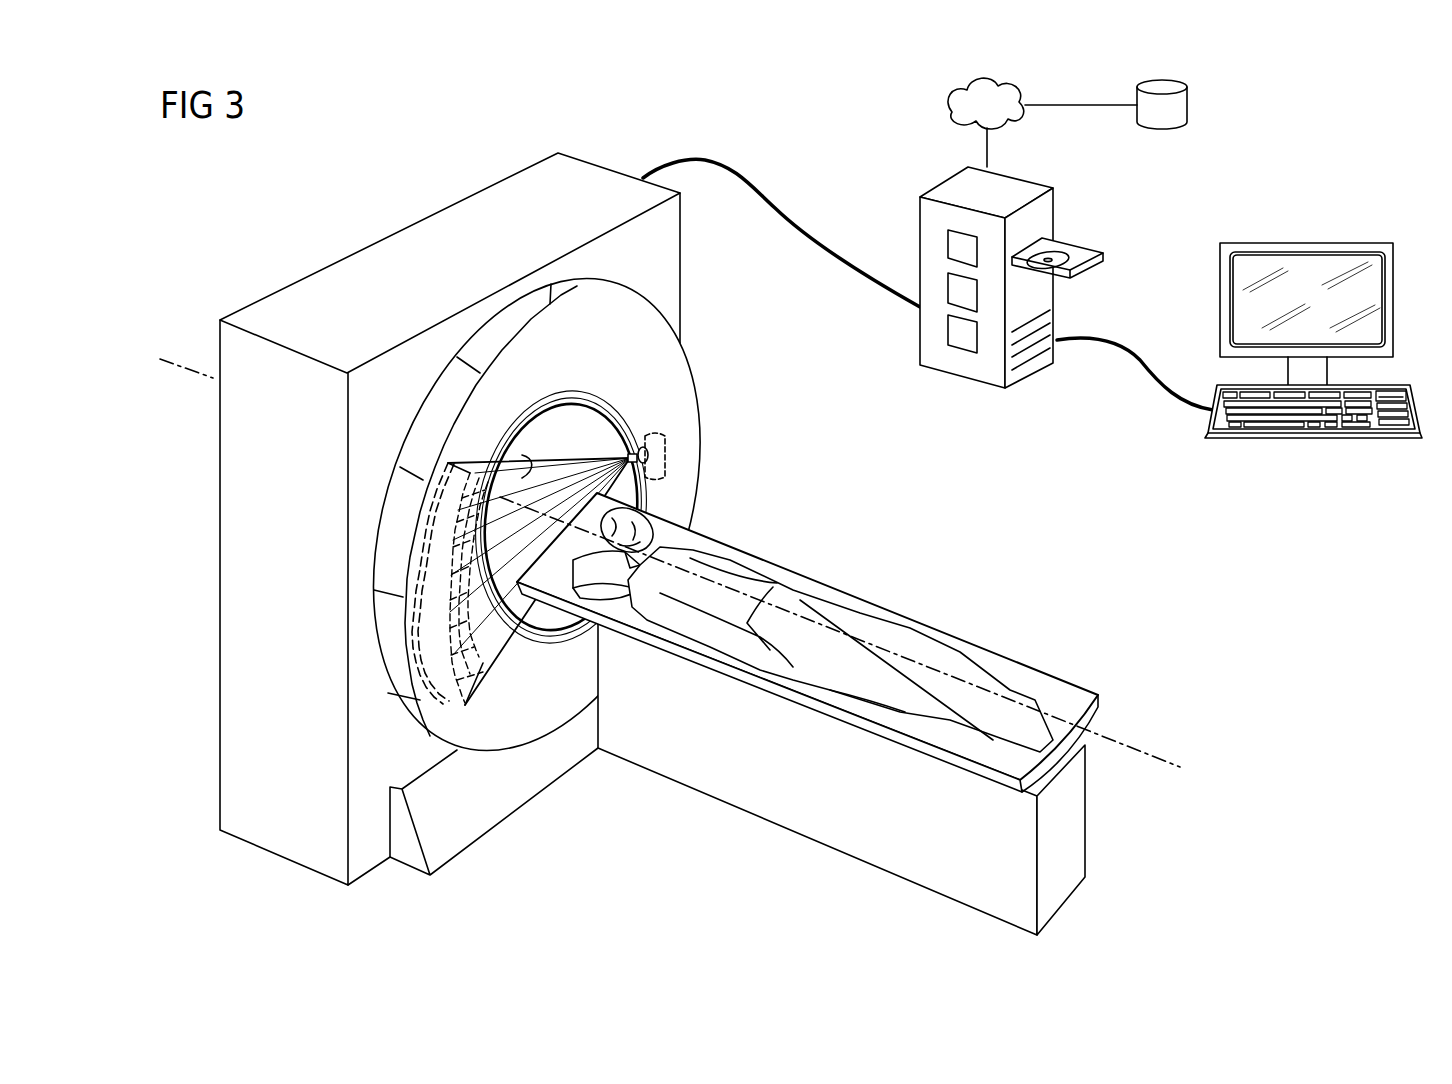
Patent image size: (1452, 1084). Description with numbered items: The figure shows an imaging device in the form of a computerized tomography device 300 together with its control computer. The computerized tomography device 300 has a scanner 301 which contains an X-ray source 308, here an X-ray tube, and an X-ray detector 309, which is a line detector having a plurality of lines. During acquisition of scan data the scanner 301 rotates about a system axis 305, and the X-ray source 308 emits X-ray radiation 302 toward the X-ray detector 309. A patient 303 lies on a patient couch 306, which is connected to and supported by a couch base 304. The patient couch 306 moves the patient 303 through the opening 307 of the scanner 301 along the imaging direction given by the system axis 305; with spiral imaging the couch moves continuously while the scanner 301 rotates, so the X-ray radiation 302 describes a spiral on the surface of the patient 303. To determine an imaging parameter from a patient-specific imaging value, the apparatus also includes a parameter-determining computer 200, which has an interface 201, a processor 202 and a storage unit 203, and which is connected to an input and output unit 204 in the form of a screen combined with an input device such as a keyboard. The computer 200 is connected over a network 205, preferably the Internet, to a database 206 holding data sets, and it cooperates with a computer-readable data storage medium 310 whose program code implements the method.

The parameter-determining computer 200 is at (1005, 185).
The interface 201 is at (947, 247).
The processor 202 is at (947, 285).
The storage unit 203 is at (960, 353).
The input and output unit 204 is at (1220, 305).
The network 205 is at (947, 105).
The database 206 is at (1190, 102).
The computerized tomography device 300 is at (407, 240).
The scanner 301 is at (699, 396).
The X-ray radiation 302 is at (583, 457).
The patient 303 is at (885, 643).
The couch base 304 is at (905, 862).
The system axis 305 is at (1123, 740).
The patient couch 306 is at (1000, 673).
The opening 307 is at (522, 455).
The X-ray source 308 is at (665, 455).
The X-ray detector 309 is at (472, 675).
The computer-readable data storage medium 310 is at (1067, 253).